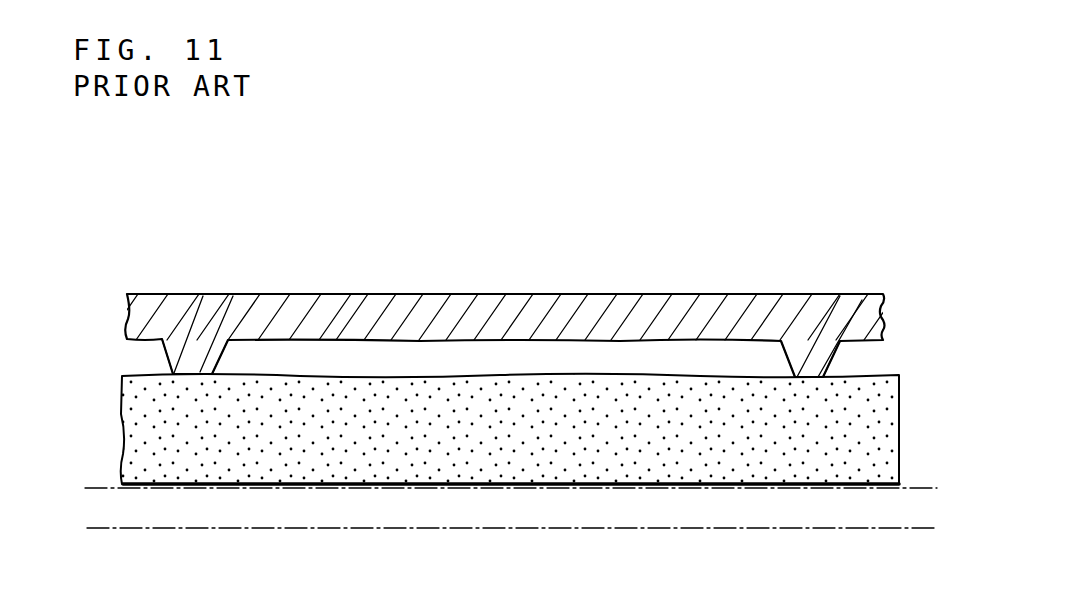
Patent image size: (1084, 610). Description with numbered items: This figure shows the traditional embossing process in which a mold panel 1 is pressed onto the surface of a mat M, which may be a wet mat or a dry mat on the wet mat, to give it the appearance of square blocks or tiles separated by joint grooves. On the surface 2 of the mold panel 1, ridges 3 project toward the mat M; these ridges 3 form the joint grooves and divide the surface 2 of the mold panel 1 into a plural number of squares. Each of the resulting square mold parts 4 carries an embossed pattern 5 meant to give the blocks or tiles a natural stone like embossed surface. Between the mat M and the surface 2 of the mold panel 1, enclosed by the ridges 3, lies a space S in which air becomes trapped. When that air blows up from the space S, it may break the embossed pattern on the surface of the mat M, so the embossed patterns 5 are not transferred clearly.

The mold panel 1 is at (617, 280).
The surface of the mold panel 2 is at (323, 355).
The ridges 3 is at (192, 358).
The square mold parts 4 is at (543, 340).
The embossed patterns 5 is at (432, 340).
The space S is at (382, 356).
The mat M is at (713, 407).